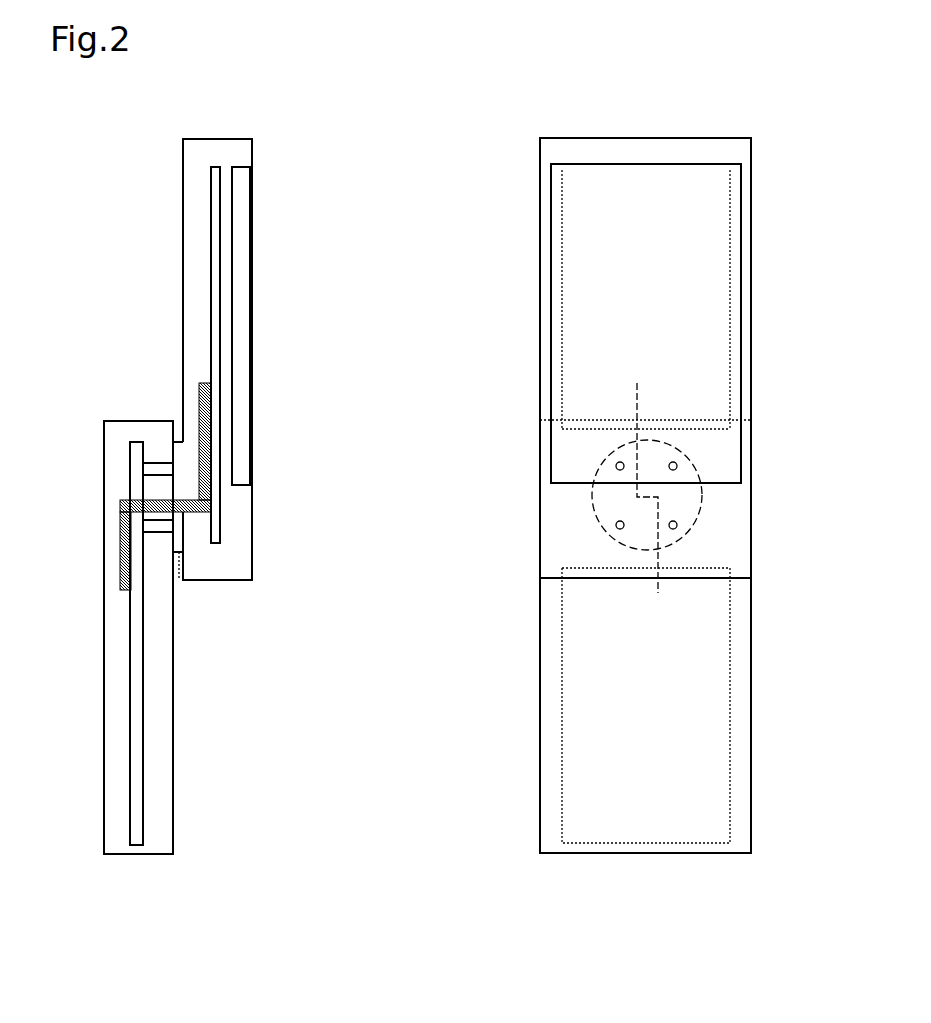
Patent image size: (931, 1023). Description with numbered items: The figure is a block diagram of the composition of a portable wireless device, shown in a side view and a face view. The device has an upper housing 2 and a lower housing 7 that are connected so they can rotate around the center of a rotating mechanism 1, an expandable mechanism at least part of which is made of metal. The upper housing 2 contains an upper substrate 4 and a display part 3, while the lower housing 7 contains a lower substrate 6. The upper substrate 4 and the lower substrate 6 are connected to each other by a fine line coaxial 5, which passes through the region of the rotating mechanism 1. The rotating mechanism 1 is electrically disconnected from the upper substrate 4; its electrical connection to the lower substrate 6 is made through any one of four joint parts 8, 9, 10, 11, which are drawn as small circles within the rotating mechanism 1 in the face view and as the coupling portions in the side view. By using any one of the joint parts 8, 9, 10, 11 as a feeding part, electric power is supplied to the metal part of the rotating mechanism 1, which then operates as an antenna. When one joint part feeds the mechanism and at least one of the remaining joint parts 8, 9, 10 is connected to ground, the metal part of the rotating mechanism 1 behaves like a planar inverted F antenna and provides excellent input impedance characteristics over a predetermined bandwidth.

The rotating mechanism 1 is at (180, 552).
The upper housing 2 is at (242, 522).
The display part 3 is at (242, 283).
The upper substrate 4 is at (221, 237).
The fine line coaxial 5 is at (118, 544).
The lower substrate 6 is at (131, 779).
The lower housing 7 is at (117, 705).
The joint part 8 is at (162, 460).
The joint part 9 is at (145, 533).
The joint part 10 is at (685, 460).
The joint part 11 is at (683, 527).